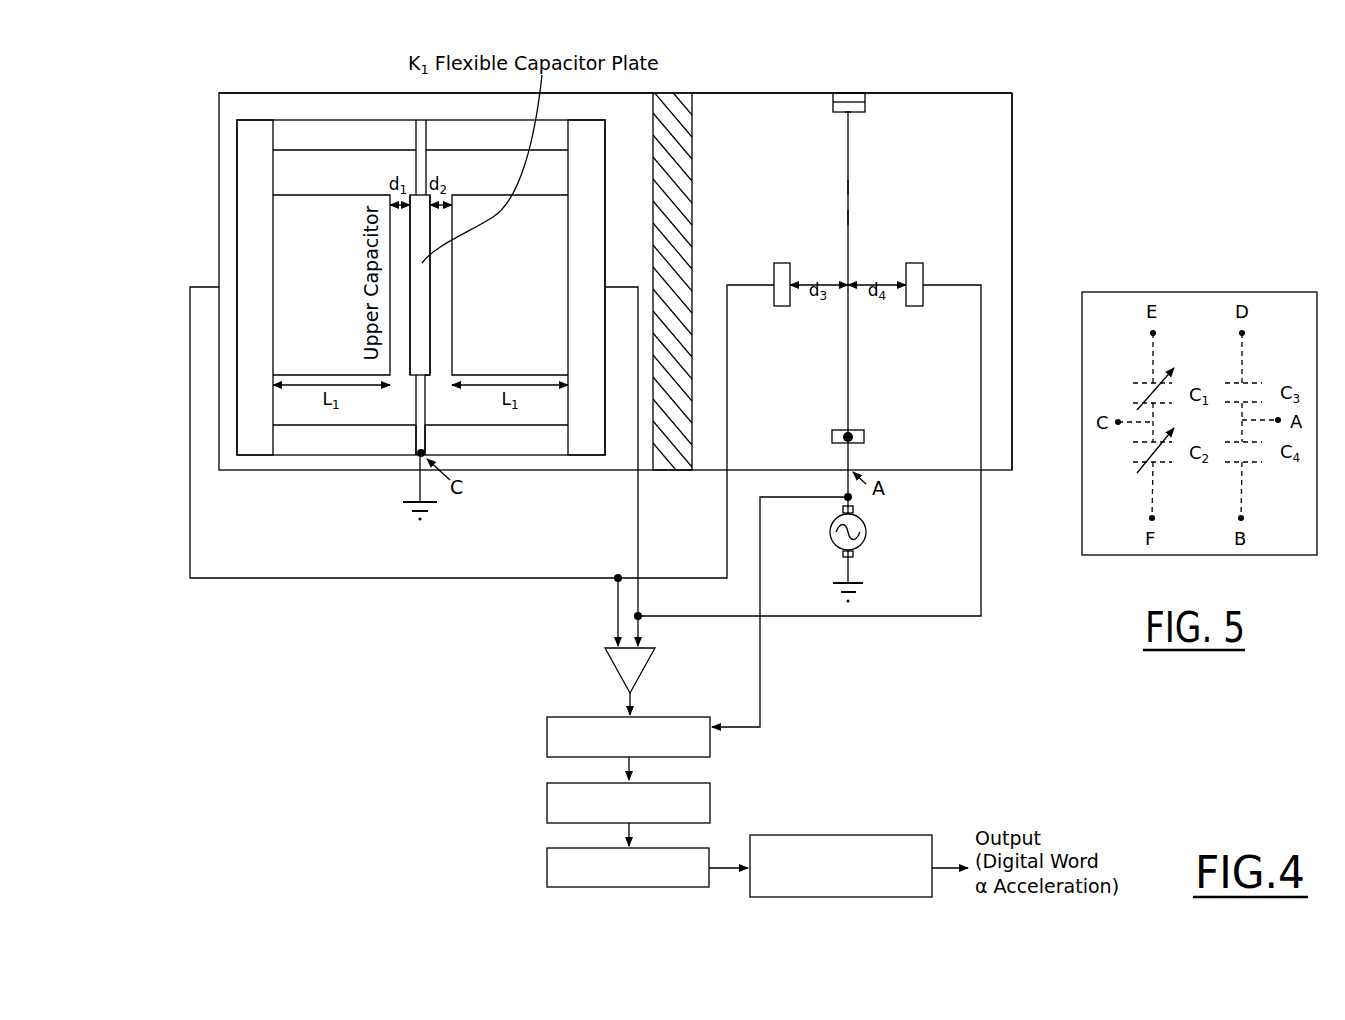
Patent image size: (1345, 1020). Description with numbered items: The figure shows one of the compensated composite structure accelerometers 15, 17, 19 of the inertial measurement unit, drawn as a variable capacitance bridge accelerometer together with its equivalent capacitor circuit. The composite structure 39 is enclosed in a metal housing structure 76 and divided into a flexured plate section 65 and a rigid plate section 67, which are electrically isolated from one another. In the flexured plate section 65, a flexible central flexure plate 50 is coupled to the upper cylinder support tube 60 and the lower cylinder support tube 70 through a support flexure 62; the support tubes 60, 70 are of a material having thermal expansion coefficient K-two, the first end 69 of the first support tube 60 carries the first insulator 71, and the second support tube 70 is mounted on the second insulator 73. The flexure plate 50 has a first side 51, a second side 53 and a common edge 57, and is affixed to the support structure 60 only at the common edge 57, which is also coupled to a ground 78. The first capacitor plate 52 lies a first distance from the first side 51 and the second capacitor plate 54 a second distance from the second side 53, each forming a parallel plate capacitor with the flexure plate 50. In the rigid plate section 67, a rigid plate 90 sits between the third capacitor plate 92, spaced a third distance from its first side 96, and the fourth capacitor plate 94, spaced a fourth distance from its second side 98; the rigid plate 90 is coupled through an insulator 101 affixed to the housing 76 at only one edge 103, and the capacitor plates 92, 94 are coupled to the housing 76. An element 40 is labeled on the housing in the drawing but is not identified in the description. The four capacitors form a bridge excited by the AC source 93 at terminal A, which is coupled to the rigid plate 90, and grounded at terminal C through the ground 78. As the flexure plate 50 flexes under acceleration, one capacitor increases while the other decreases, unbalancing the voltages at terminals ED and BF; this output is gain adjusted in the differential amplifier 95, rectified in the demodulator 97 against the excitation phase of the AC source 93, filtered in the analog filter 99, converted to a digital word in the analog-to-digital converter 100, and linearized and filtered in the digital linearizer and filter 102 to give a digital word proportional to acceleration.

The compensated composite structure accelerometer 15 is at (671, 253).
The compensated composite structure accelerometer 17 is at (671, 253).
The compensated composite structure accelerometer 19 is at (671, 253).
The composite structure 39 is at (258, 120).
The housing 40 is at (368, 92).
The flexured plate section 65 is at (268, 93).
The rigid plate section 67 is at (772, 92).
The metal housing structure 76 is at (977, 90).
The first end 69 is at (270, 443).
The second insulator 73 is at (578, 120).
The upper cylinder support tube 60 is at (323, 120).
The lower cylinder support tube 70 is at (457, 120).
The support flexure 62 is at (415, 159).
The flexure plate 50 is at (407, 360).
The second side 53 is at (432, 272).
The first side 51 is at (407, 303).
The common edge 57 is at (430, 380).
The first capacitor plate 52 is at (350, 195).
The second capacitor plate 54 is at (505, 195).
The ground 78 is at (413, 472).
The first insulator 71 is at (237, 342).
The insulator 101 is at (853, 91).
The rigid plate 90 is at (850, 143).
The edge 103 is at (847, 122).
The first side 96 is at (848, 188).
The second side 98 is at (850, 217).
The third capacitor plate 92 is at (777, 262).
The fourth capacitor plate 94 is at (913, 262).
The AC source 93 is at (865, 528).
The differential amplifier 95 is at (615, 678).
The demodulator 97 is at (547, 731).
The analog filter 99 is at (547, 797).
The analog-to-digital converter 100 is at (547, 861).
The digital linearizer and filter 102 is at (832, 835).